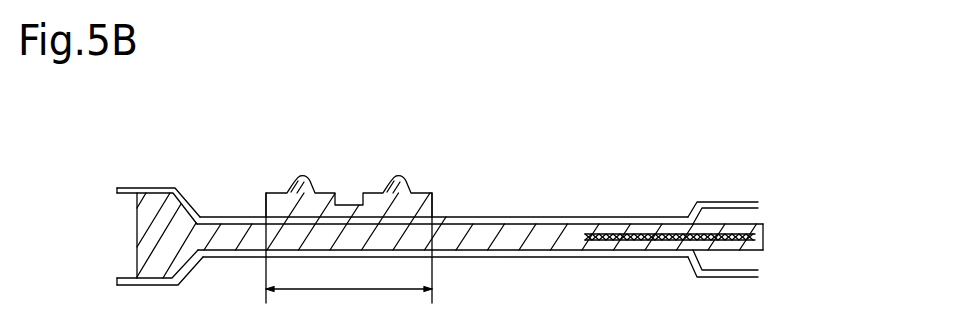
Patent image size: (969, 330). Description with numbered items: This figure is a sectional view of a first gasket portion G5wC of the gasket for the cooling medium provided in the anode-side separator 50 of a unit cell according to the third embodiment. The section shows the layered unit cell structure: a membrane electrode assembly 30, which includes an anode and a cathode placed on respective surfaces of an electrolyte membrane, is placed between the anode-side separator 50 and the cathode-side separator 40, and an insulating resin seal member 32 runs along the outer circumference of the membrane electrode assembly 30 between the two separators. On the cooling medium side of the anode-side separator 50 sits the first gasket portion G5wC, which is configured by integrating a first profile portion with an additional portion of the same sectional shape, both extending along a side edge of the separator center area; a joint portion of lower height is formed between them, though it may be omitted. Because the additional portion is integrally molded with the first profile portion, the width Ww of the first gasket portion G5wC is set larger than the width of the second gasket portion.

The membrane electrode assembly 30 is at (764, 224).
The resin seal member 32 is at (142, 238).
The cathode-side separator 40 is at (759, 276).
The anode-side separator 50 is at (759, 202).
The first gasket portion G5wC is at (506, 122).
The width of the first gasket portion Ww is at (349, 257).